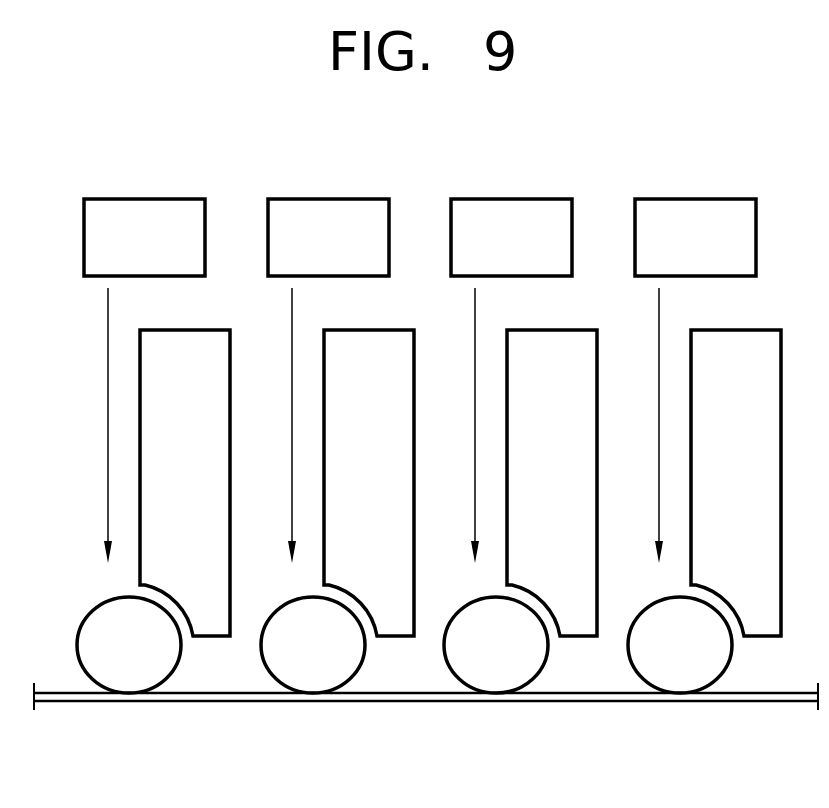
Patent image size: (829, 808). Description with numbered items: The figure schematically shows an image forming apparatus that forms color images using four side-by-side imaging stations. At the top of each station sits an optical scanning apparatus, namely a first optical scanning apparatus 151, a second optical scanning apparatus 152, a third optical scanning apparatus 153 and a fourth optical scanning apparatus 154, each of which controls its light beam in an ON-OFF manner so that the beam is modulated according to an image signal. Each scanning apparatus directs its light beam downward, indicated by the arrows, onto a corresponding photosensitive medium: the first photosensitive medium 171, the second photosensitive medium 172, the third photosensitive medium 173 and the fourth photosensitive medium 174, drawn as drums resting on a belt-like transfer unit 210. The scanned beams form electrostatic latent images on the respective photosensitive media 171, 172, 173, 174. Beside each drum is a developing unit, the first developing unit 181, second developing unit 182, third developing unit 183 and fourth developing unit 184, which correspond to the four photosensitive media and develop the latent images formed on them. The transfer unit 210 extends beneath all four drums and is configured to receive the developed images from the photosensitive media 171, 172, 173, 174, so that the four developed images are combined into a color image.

The first optical scanning apparatus 151 is at (144, 199).
The second optical scanning apparatus 152 is at (328, 199).
The third optical scanning apparatus 153 is at (511, 199).
The fourth optical scanning apparatus 154 is at (695, 199).
The first photosensitive medium 171 is at (128, 684).
The second photosensitive medium 172 is at (312, 684).
The third photosensitive medium 173 is at (495, 684).
The fourth photosensitive medium 174 is at (679, 684).
The first developing unit 181 is at (210, 630).
The second developing unit 182 is at (394, 630).
The third developing unit 183 is at (577, 630).
The fourth developing unit 184 is at (761, 630).
The transfer unit 210 is at (57, 701).